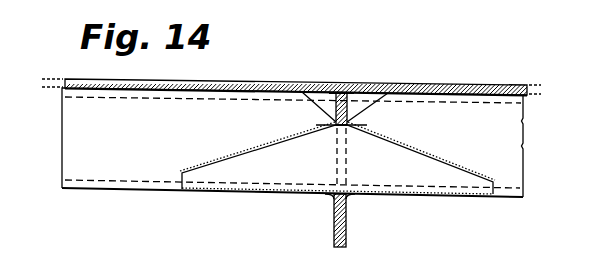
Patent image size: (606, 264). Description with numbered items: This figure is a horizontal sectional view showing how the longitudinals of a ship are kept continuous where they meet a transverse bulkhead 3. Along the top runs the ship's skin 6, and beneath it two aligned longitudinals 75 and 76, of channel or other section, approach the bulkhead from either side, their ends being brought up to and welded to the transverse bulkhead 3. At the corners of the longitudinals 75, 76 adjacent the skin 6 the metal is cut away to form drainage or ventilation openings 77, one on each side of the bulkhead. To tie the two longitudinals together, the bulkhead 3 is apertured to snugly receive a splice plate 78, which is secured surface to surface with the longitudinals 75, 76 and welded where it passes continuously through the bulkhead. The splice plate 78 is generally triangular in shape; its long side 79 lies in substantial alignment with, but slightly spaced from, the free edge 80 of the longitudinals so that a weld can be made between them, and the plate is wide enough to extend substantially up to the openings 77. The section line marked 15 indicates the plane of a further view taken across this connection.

The ship's skin 6 is at (235, 81).
The longitudinal 75 is at (62, 133).
The longitudinal 76 is at (521, 144).
The drainage or ventilation openings 77 is at (319, 100).
The splice plate 78 is at (265, 153).
The long side 79 is at (280, 182).
The free edge 80 is at (135, 186).
The transverse bulkhead 3 is at (346, 224).
The section line 15- 15 is at (57, 197).